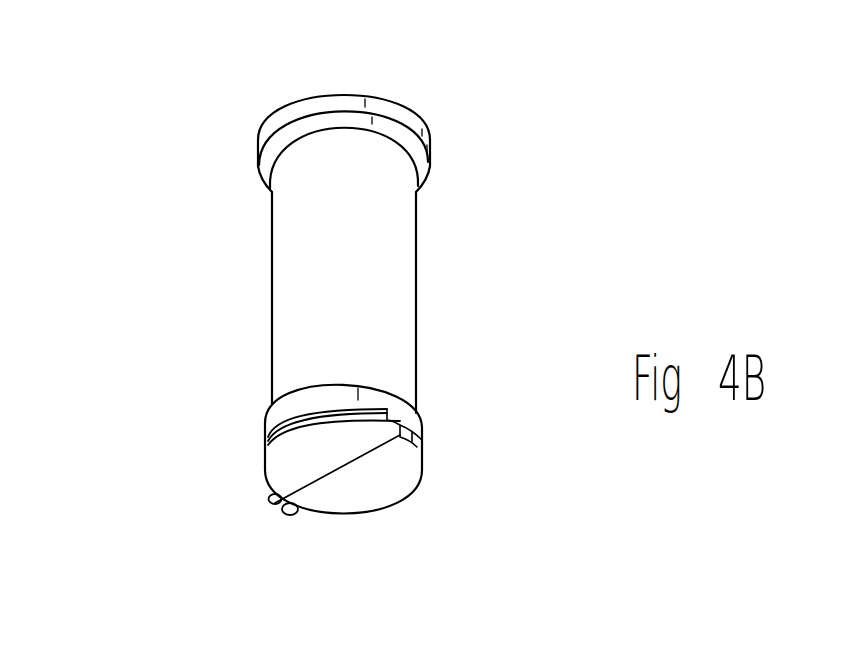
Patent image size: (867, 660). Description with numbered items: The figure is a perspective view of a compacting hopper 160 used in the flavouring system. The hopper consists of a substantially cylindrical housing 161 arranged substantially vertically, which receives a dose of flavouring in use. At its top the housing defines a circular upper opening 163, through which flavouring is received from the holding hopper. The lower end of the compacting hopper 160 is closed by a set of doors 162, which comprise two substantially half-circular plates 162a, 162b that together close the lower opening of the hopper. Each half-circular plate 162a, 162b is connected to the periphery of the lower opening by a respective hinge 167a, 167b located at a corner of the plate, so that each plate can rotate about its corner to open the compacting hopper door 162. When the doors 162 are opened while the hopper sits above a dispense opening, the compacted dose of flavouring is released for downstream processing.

The compacting hopper 160 is at (497, 301).
The substantially cylindrical housing 161 is at (272, 282).
The set of doors 162 is at (406, 511).
The half-circular plate 162a is at (300, 450).
The half-circular plate 162b is at (352, 500).
The circular upper opening 163 is at (378, 89).
The hinge 167a is at (268, 499).
The hinge 167b is at (287, 515).